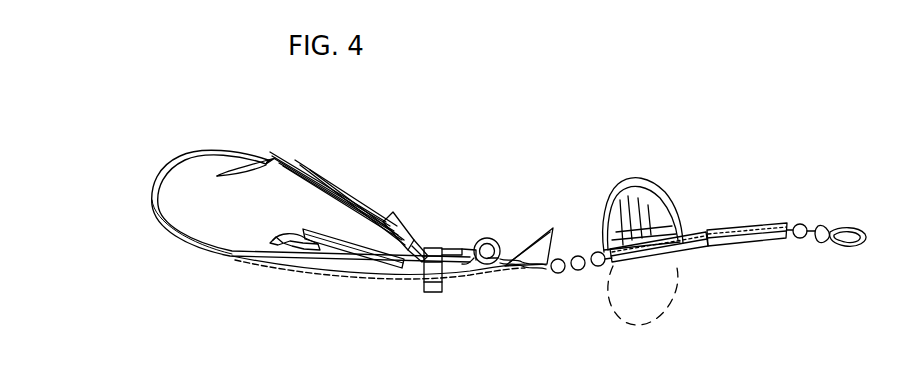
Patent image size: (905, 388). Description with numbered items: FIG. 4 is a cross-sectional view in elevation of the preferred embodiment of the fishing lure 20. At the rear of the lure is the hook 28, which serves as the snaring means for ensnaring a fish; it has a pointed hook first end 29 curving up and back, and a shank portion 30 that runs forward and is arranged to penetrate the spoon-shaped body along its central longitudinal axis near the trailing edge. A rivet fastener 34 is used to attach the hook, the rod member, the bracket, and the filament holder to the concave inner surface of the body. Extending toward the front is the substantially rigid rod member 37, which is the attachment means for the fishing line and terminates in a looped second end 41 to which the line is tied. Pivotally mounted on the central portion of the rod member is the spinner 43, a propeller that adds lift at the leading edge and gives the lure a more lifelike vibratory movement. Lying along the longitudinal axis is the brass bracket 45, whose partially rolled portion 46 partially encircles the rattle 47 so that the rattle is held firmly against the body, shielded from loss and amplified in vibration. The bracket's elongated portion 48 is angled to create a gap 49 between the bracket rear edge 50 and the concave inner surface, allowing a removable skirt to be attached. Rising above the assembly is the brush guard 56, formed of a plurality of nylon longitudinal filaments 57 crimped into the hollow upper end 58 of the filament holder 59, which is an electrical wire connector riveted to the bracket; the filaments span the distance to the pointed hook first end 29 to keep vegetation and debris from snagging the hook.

The fishing lure 20 is at (118, 107).
The hook 28 is at (158, 171).
The pointed hook first end 29 is at (236, 160).
The shank portion 30 is at (268, 260).
The rivet fastener 34 is at (434, 292).
The rod member 37 is at (747, 252).
The looped second end 41 is at (842, 228).
The spinner 43 is at (660, 187).
The longitudinal bracket 45 is at (493, 228).
The partially rolled portion 46 is at (480, 246).
The rattle 47 is at (498, 258).
The elongated portion 48 is at (350, 258).
The gap 49 is at (288, 236).
The bracket rear edge 50 is at (297, 235).
The brush guard 56 is at (316, 152).
The longitudinal filaments 57 is at (289, 158).
The hollow upper end 58 is at (392, 228).
The filament holder 59 is at (403, 229).